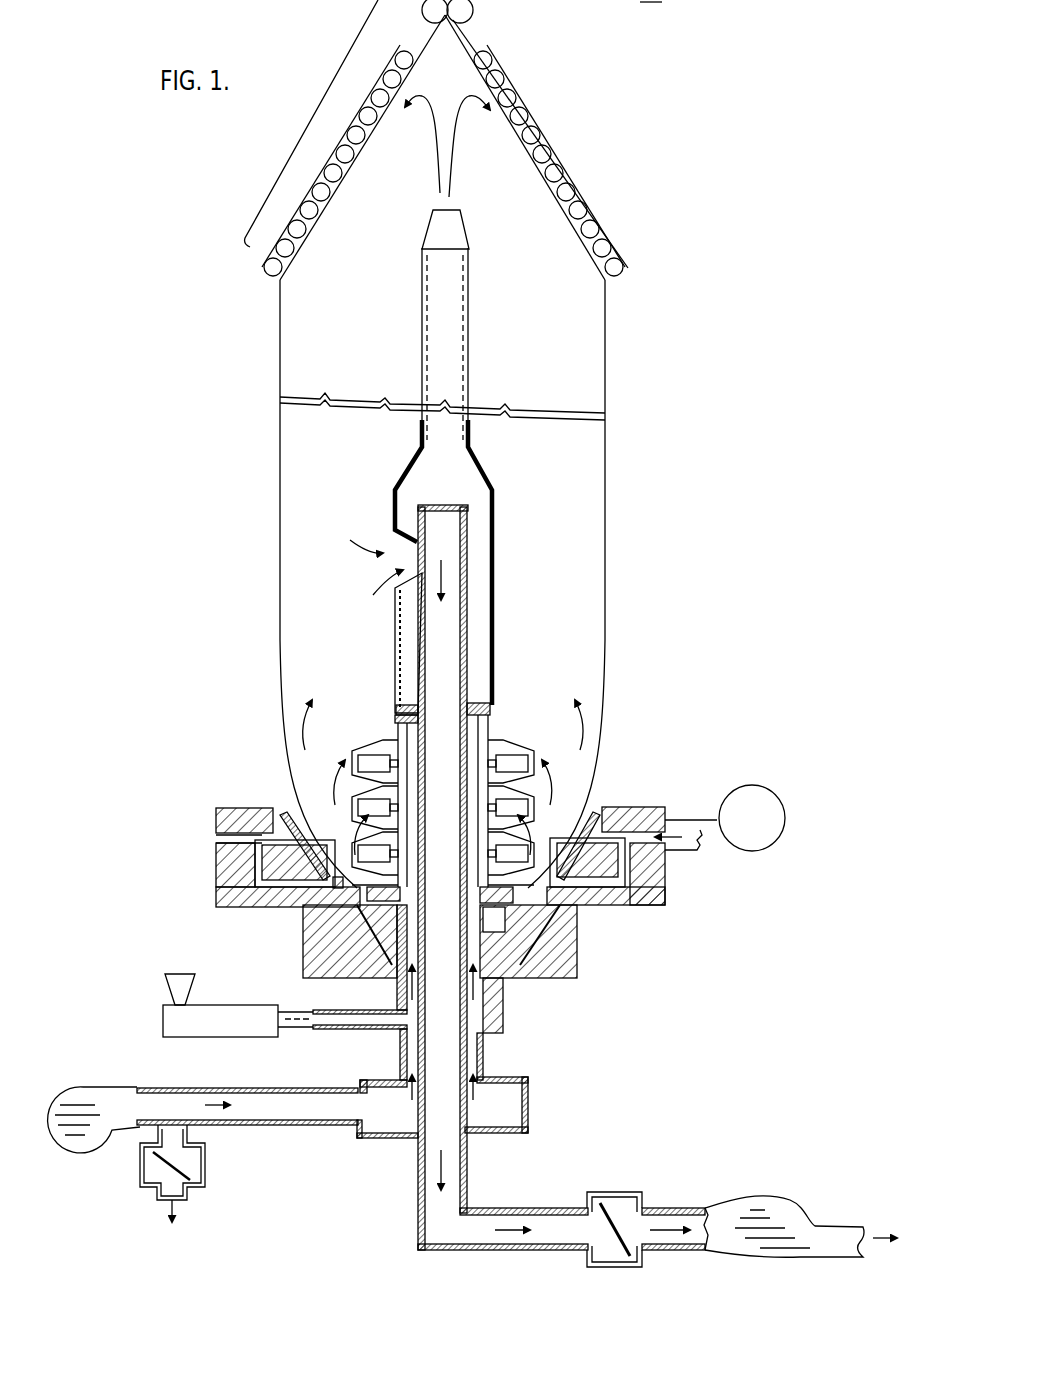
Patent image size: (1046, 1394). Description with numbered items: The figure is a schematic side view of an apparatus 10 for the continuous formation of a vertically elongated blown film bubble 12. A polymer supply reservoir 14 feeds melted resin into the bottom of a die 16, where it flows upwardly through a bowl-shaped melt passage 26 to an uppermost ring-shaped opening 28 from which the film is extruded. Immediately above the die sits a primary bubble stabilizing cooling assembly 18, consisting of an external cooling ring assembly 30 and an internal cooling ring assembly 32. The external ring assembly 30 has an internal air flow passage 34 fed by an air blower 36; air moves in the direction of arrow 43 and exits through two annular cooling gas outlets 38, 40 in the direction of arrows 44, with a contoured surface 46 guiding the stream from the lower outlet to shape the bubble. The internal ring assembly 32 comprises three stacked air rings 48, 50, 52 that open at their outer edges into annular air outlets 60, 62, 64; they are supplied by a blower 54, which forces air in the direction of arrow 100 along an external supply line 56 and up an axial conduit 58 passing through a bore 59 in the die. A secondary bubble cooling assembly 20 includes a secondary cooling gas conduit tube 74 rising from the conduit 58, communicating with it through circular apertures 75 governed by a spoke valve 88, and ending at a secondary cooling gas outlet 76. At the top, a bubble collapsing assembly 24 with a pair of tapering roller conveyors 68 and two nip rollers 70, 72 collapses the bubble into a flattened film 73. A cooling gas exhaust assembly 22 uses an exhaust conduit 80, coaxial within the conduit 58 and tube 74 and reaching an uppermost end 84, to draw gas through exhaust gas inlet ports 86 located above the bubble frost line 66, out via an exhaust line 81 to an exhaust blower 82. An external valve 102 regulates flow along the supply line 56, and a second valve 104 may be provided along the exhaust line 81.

The apparatus 10 is at (715, 767).
The blown film bubble 12 is at (608, 353).
The polymer supply reservoir 14 is at (250, 1040).
The die 16 is at (303, 962).
The primary bubble stabilizing cooling assembly 18 is at (213, 870).
The secondary bubble cooling assembly 20 is at (450, 337).
The cooling gas exhaust assembly 22 is at (462, 1147).
The bubble collapsing assembly 24 is at (303, 137).
The melt passage 26 is at (540, 980).
The ring-shaped opening 28 is at (458, 935).
The external cooling ring assembly 30 is at (665, 877).
The internal cooling ring assembly 32 is at (500, 733).
The internal air flow passage 34 is at (230, 838).
The air blower 36 is at (770, 852).
The cooling gas outlet 38 is at (577, 907).
The cooling gas outlet 40 is at (617, 815).
The arrow 43 is at (675, 850).
The arrows 44 is at (267, 797).
The contoured surface 46 is at (440, 860).
The air ring 48 is at (592, 807).
The air ring 50 is at (508, 793).
The air ring 52 is at (520, 747).
The blower 54 is at (88, 1153).
The external supply line 56 is at (305, 1125).
The axial conduit 58 is at (412, 740).
The bore 59 is at (497, 918).
The annular air outlet 60 is at (322, 850).
The annular air outlet 62 is at (372, 812).
The annular air outlet 64 is at (350, 762).
The bubble frost line 66 is at (280, 672).
The roller conveyors 68 is at (268, 252).
The nip roller 70 is at (428, 18).
The nip roller 72 is at (473, 12).
The flattened film 73 is at (578, 0).
The secondary cooling gas conduit tube 74 is at (458, 462).
The circular apertures 75 is at (415, 702).
The secondary cooling gas outlet 76 is at (455, 233).
The exhaust conduit 80 is at (453, 640).
The exhaust line 81 is at (678, 1208).
The exhaust blower 82 is at (768, 1197).
The uppermost end 84 is at (440, 525).
The exhaust gas inlet ports 86 is at (393, 550).
The spoke valve 88 is at (395, 708).
The arrow 100 is at (167, 1095).
The external valve 102 is at (205, 1185).
The second valve 104 is at (598, 1196).